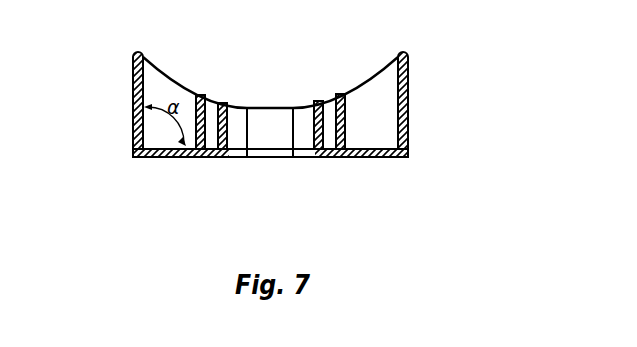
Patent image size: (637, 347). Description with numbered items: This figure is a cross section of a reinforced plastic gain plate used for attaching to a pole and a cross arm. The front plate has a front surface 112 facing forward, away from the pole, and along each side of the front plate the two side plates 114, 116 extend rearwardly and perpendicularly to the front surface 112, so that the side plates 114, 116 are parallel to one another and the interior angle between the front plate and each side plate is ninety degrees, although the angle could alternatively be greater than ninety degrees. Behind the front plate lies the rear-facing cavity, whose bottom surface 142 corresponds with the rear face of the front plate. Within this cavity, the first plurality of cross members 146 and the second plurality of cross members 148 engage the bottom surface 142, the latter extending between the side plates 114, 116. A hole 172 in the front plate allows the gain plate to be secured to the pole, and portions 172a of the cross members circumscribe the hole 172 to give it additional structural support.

The front surface 112 is at (368, 157).
The side plate 114 is at (408, 85).
The side plate 116 is at (133, 107).
The bottom surface 142 is at (384, 147).
The first plurality of cross members 146 is at (193, 134).
The second plurality of cross members 148 is at (177, 92).
The hole 172 is at (275, 117).
The portion circumscribing the hole 172a is at (314, 136).